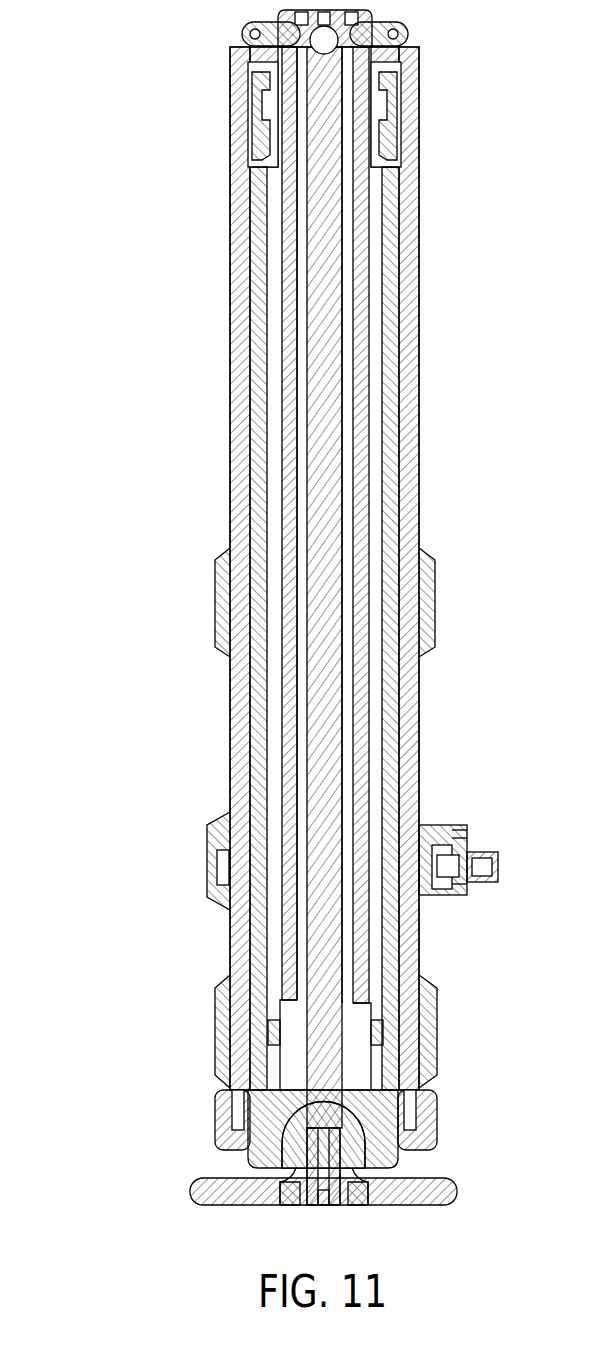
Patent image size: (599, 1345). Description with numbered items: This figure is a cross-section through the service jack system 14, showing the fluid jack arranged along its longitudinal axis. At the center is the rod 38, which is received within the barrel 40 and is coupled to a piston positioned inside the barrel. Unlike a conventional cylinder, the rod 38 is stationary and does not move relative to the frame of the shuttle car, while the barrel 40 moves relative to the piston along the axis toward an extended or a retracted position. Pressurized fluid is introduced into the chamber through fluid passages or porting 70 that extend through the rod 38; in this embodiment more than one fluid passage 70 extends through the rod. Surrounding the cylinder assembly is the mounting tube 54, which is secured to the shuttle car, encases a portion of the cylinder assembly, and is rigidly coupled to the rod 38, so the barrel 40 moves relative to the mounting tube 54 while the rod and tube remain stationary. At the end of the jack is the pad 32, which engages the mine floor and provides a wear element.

The jack system 14 is at (112, 445).
The pad 32 is at (458, 1190).
The rod 38 is at (360, 316).
The barrel 40 is at (395, 415).
The mounting tube 54 is at (230, 408).
The fluid passage 70 is at (297, 352).